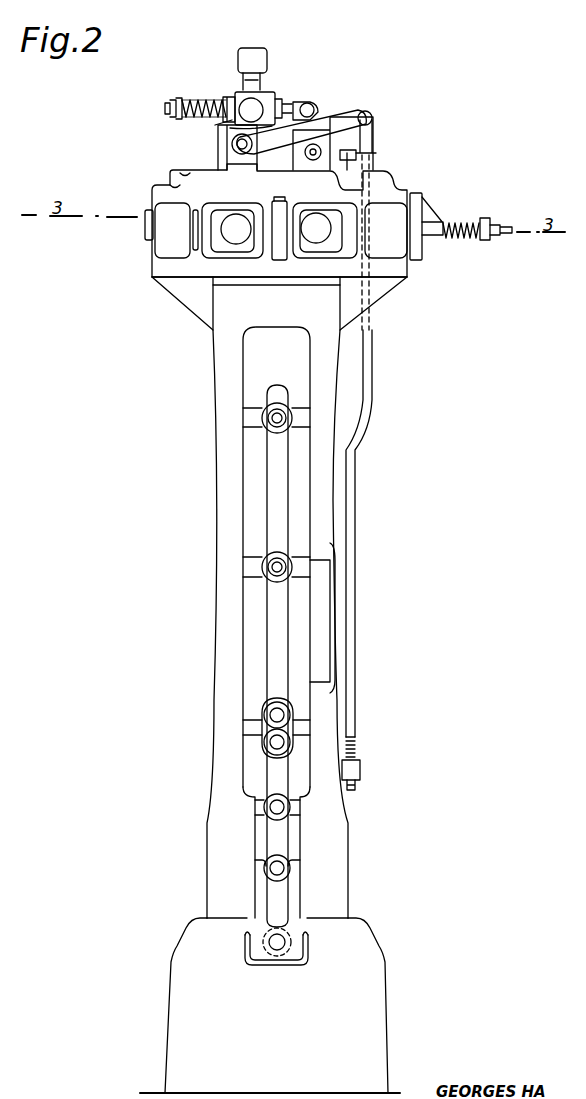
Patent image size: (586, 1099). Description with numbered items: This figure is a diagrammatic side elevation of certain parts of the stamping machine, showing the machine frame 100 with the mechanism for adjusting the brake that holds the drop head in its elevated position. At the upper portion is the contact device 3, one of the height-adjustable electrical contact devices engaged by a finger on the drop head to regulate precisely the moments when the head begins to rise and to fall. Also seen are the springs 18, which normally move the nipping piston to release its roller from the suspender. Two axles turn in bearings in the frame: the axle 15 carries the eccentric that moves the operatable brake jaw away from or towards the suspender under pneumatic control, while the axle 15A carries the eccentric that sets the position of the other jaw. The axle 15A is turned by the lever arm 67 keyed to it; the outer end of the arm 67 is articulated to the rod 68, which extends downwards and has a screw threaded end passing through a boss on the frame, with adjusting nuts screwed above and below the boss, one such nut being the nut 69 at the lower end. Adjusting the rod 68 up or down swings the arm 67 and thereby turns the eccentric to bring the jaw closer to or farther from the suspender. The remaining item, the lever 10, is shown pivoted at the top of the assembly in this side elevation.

The contact device 3 is at (203, 100).
The lever 10 is at (318, 116).
The axle 15 is at (320, 152).
The axle 15A is at (232, 148).
The springs 18 is at (462, 226).
The lever arm 67 is at (358, 117).
The rod 68 is at (371, 139).
The nut 69 is at (360, 759).
The machine frame 100 is at (223, 722).